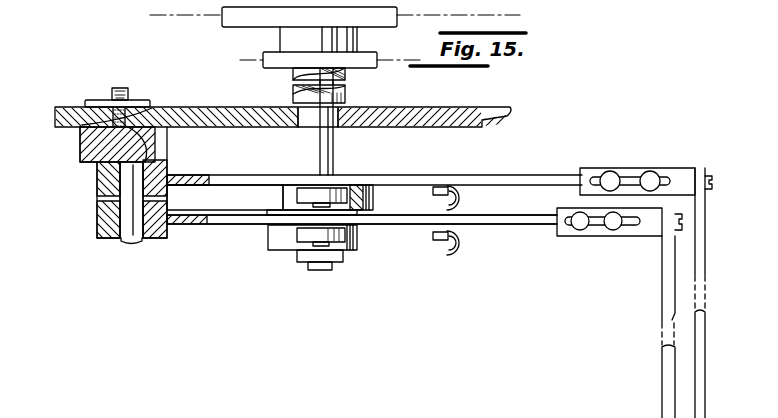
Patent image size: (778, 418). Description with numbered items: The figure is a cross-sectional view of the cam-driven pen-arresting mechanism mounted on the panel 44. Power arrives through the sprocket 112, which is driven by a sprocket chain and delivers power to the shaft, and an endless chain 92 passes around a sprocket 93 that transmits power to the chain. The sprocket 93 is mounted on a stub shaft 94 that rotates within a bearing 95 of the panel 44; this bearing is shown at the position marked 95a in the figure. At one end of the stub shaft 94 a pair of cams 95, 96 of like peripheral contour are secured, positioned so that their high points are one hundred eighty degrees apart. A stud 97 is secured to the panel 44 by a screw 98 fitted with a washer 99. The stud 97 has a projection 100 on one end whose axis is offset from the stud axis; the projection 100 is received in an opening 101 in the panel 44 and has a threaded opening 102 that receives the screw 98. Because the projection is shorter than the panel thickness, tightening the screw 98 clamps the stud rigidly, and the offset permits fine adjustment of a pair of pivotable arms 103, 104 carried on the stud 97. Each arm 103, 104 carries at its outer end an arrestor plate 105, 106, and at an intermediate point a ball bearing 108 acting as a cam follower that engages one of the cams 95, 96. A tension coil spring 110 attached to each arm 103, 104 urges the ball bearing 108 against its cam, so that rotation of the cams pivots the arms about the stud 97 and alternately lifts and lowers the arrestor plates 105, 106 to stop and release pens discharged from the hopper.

The panel 44 is at (459, 128).
The endless chain 92 is at (389, 62).
The sprocket 93 is at (276, 70).
The stub shaft 94 is at (337, 152).
The cam 95 is at (268, 240).
The opening in plate 95a is at (309, 127).
The cam 96 is at (282, 194).
The stud 97 is at (132, 244).
The screw 98 is at (110, 88).
The washer 99 is at (96, 100).
The projection 100 is at (80, 127).
The opening 101 is at (153, 108).
The threaded opening 102 is at (152, 141).
The pivotable arm 103 is at (414, 176).
The pivotable arm 104 is at (397, 226).
The arrestor plate 105 is at (706, 364).
The arrestor plate 106 is at (662, 383).
The ball bearing 108 is at (308, 193).
The tension coil spring 110 is at (468, 203).
The sprocket 112 is at (237, 29).